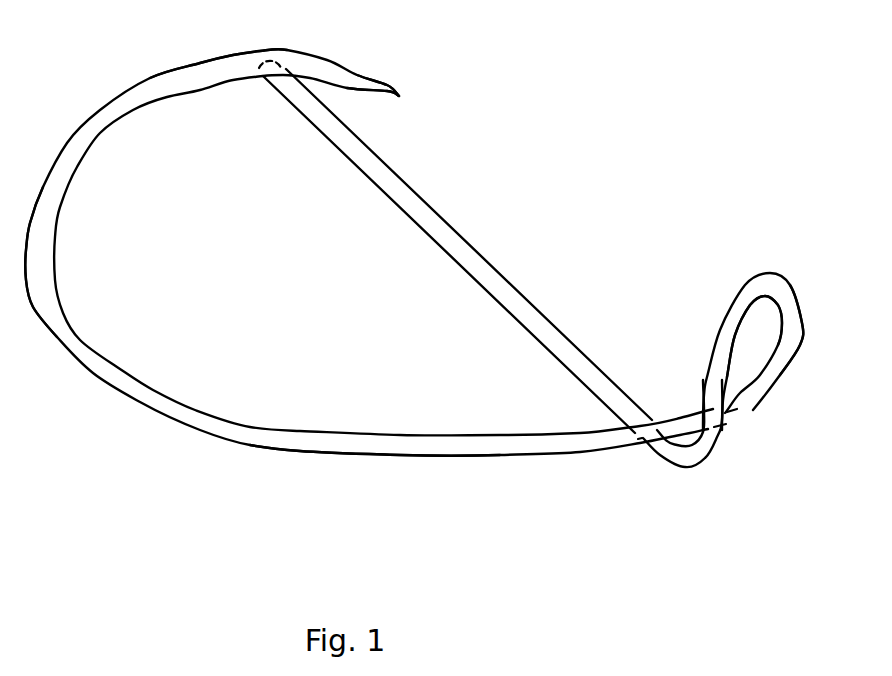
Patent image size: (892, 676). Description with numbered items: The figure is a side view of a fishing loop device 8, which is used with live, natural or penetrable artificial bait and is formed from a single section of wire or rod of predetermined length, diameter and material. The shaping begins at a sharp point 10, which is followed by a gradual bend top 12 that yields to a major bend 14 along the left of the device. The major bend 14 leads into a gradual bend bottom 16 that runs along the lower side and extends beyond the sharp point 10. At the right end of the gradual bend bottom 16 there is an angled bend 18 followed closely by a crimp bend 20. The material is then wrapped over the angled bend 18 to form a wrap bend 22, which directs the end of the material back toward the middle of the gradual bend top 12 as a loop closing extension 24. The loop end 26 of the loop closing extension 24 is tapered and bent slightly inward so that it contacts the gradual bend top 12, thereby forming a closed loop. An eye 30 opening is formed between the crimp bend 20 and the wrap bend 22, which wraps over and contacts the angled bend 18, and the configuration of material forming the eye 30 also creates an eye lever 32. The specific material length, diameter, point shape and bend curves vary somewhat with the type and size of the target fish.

The fishing loop device 8 is at (255, 430).
The sharp point 10 is at (387, 83).
The gradual bend top 12 is at (193, 63).
The major bend 14 is at (55, 250).
The gradual bend bottom 16 is at (358, 453).
The angled bend 18 is at (728, 427).
The crimp bend 20 is at (782, 280).
The wrap bend 22 is at (670, 465).
The loop closing extension 24 is at (475, 250).
The loop end 26 is at (263, 78).
The eye 30 is at (758, 340).
The eye lever 32 is at (788, 372).